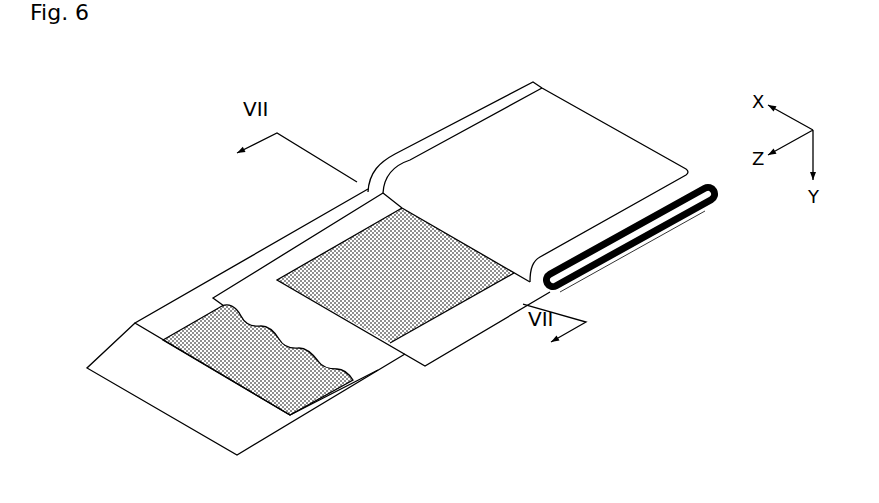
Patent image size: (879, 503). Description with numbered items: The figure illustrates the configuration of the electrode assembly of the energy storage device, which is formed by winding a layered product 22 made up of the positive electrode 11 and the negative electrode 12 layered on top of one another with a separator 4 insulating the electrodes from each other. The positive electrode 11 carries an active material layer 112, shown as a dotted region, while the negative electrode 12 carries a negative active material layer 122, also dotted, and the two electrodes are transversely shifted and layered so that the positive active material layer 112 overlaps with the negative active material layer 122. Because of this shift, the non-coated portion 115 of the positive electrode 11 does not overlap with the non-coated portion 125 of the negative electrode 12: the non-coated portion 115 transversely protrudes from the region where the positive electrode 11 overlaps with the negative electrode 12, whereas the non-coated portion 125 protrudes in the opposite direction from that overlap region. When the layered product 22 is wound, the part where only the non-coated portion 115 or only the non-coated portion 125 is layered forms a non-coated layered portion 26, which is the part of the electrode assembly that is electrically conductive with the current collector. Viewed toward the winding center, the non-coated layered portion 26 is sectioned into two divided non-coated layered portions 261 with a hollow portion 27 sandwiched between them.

The separator 4 is at (367, 371).
The positive electrode 11 is at (358, 233).
The negative electrode 12 is at (177, 297).
The layered product 22 is at (625, 262).
The non-coated layered portion 26 is at (457, 123).
The hollow portion 27 is at (715, 207).
The active material layer 112 is at (322, 272).
The non-coated portion of the positive electrode 115 is at (457, 331).
The negative active material layer 122 is at (293, 388).
The negative active material layer non-coated portion 125 is at (213, 285).
The divided non-coated layered portion 261 is at (650, 222).